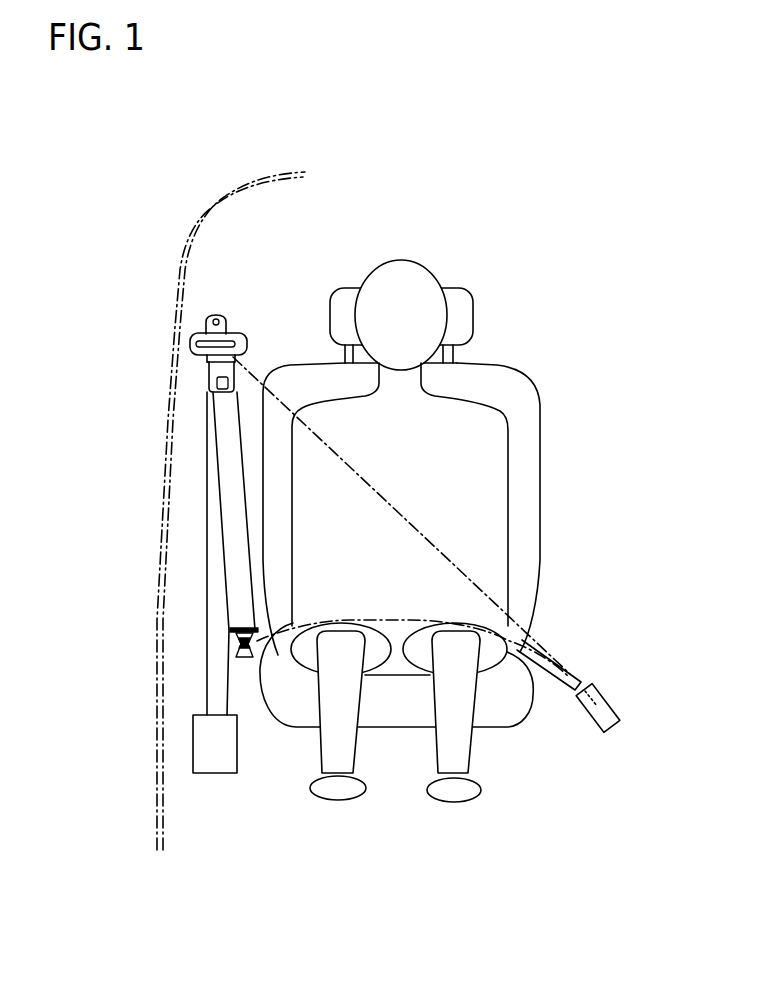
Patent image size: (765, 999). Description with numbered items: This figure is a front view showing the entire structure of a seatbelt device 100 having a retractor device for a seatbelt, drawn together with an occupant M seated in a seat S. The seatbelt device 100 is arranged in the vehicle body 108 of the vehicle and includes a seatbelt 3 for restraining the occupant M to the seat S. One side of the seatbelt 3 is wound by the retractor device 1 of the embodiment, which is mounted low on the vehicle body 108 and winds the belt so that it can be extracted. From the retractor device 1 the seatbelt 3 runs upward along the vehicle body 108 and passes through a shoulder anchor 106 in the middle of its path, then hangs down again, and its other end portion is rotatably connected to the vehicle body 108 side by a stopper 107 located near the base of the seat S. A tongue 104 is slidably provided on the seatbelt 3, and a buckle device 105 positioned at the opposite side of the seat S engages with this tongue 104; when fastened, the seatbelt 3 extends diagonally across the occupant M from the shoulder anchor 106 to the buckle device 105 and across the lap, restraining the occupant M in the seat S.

The retractor device 1 is at (205, 762).
The seatbelt 3 is at (211, 674).
The seatbelt device 100 is at (198, 568).
The tongue 104 is at (210, 362).
The buckle device 105 is at (606, 707).
The shoulder anchor 106 is at (226, 334).
The stopper 107 is at (245, 658).
The vehicle body 108 is at (176, 282).
The occupant M is at (398, 260).
The seat S is at (546, 471).